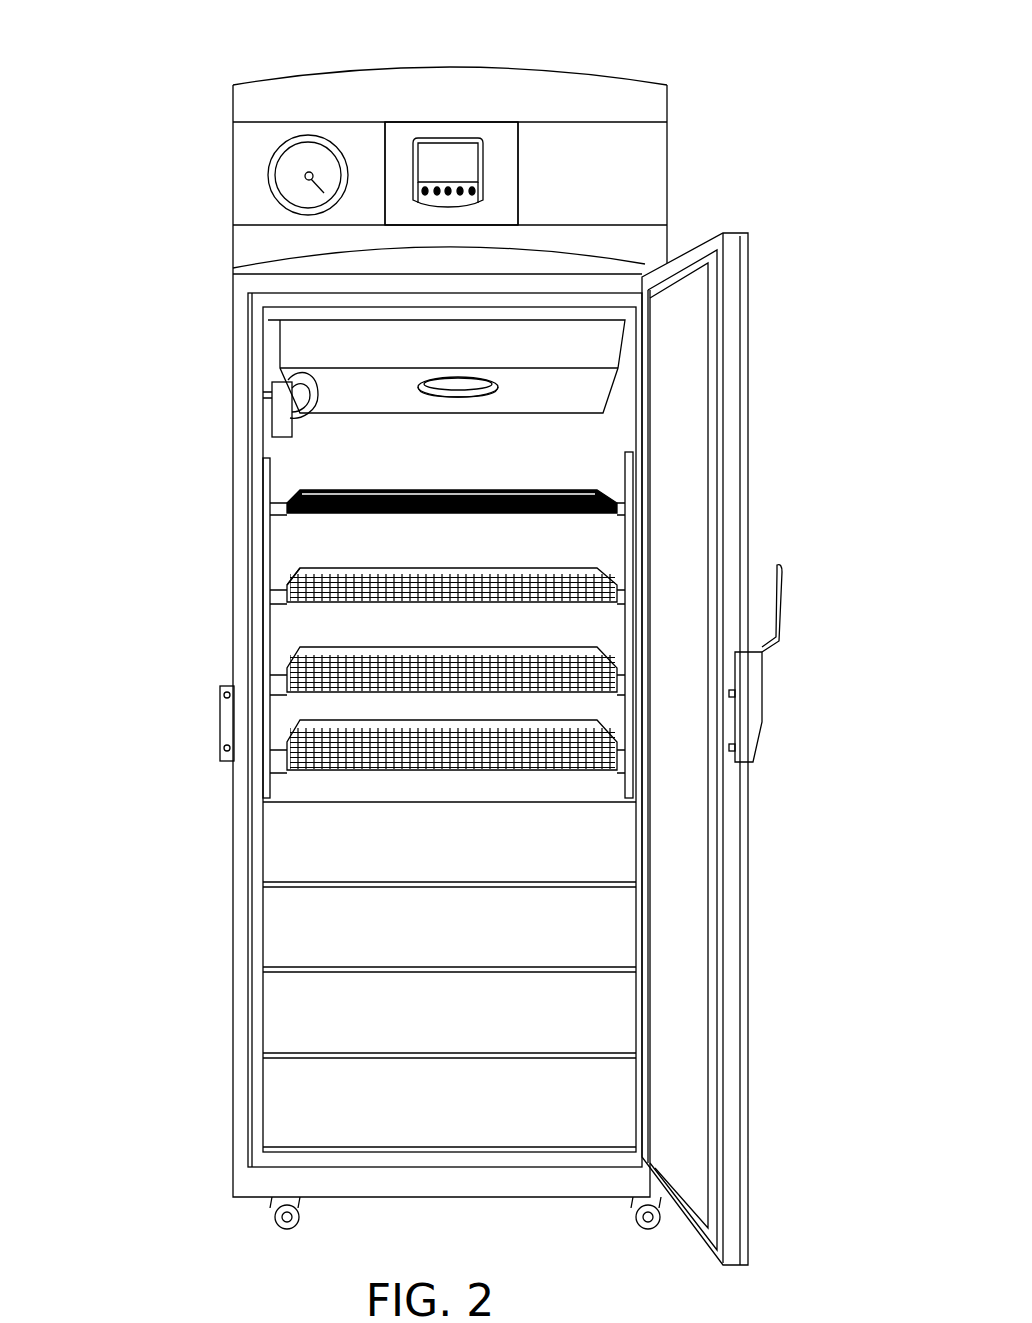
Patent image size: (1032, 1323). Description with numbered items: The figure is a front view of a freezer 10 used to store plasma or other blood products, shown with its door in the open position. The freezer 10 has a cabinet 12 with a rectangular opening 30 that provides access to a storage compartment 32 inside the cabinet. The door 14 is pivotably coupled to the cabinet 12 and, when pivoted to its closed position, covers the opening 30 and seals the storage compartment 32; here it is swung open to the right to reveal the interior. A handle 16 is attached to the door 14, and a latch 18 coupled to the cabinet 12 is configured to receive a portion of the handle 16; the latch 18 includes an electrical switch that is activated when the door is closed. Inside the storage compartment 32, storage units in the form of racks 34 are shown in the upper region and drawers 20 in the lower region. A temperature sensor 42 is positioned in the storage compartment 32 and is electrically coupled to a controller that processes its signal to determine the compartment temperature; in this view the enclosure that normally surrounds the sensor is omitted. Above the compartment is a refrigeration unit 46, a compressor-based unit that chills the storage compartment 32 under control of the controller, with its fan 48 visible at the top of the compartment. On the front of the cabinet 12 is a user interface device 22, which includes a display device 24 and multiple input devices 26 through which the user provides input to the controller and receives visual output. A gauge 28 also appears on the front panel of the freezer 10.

The freezer 10 is at (760, 110).
The cabinet 12 is at (240, 406).
The door 14 is at (748, 410).
The handle 16 is at (782, 600).
The latch 18 is at (219, 718).
The drawers 20 is at (363, 855).
The user interface device 22 is at (502, 144).
The display device 24 is at (433, 150).
The input devices 26 is at (448, 195).
The gauge 28 is at (310, 135).
The rectangular opening 30 is at (260, 453).
The storage compartment 32 is at (610, 543).
The racks 34 is at (292, 668).
The temperature sensor 42 is at (272, 390).
The refrigeration unit 46 is at (298, 347).
The fan 48 is at (460, 398).